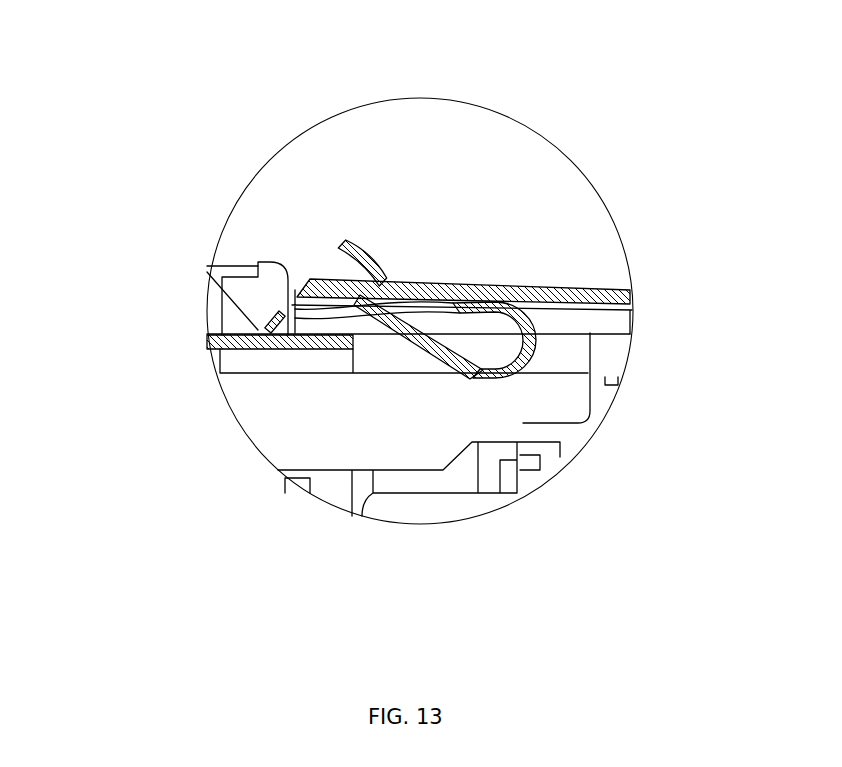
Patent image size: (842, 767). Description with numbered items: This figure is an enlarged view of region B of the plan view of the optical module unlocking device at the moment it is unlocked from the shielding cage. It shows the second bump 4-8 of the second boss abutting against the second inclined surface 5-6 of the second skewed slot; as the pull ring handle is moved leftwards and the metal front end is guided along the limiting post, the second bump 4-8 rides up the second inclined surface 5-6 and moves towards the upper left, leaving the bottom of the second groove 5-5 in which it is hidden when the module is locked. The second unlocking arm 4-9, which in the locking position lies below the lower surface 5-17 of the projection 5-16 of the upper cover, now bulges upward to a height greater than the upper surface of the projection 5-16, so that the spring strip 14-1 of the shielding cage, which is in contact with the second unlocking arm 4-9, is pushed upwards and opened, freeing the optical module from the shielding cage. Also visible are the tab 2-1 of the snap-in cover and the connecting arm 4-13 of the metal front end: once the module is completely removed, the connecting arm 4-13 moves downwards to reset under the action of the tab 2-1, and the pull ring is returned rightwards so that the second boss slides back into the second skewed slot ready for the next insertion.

The detail region B is at (546, 130).
The spring strip 14-1 is at (387, 274).
The tab 2-1 is at (213, 297).
The connecting arm 4-13 is at (282, 343).
The projection 5-16 is at (438, 314).
The lower surface 5-17 is at (574, 325).
The second unlocking arm 4-9 is at (506, 313).
The second bump 4-8 is at (506, 379).
The second inclined surface 5-6 is at (490, 408).
The second groove 5-5 is at (517, 427).